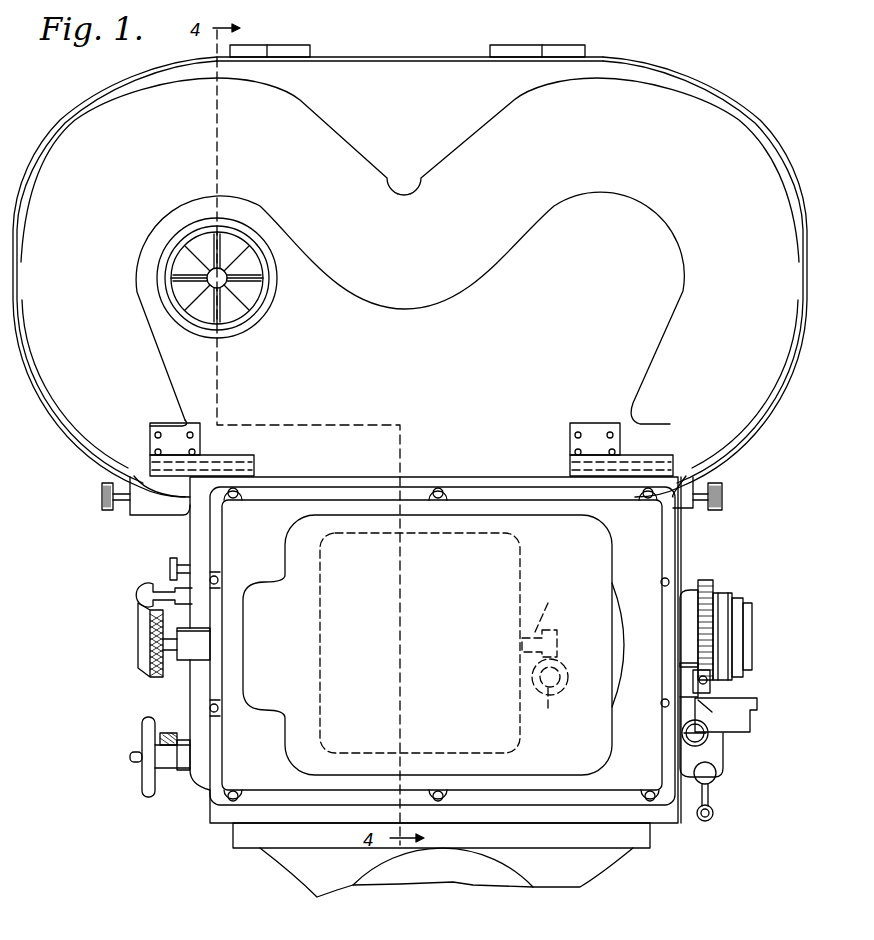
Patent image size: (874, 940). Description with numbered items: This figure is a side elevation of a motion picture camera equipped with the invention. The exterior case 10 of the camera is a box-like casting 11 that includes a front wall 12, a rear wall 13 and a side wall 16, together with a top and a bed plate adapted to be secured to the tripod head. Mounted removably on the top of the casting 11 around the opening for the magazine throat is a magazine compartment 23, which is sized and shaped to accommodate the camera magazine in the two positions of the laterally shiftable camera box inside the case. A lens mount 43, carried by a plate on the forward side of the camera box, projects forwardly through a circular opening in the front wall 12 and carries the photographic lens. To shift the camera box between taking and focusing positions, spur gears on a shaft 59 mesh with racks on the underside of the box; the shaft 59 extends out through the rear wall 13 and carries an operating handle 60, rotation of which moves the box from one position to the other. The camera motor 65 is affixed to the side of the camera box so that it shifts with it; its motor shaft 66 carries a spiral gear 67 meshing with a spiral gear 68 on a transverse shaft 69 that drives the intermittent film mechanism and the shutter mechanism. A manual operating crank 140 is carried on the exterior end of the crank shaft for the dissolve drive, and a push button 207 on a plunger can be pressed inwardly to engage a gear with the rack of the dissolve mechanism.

The exterior case 10 is at (194, 832).
The box-like casting 11 is at (662, 562).
The front wall 12 is at (673, 543).
The rear wall 13 is at (190, 532).
The side wall 16 is at (275, 525).
The magazine compartment 23 is at (718, 90).
The lens mount 43 is at (697, 584).
The shaft 59 is at (178, 760).
The operating handle 60 is at (142, 790).
The camera motor 65 is at (522, 558).
The motor shaft 66 is at (549, 606).
The spiral gear 67 is at (552, 625).
The spiral gear 68 is at (567, 663).
The transverse shaft 69 is at (558, 711).
The manual operating crank 140 is at (130, 592).
The push button 207 is at (170, 569).